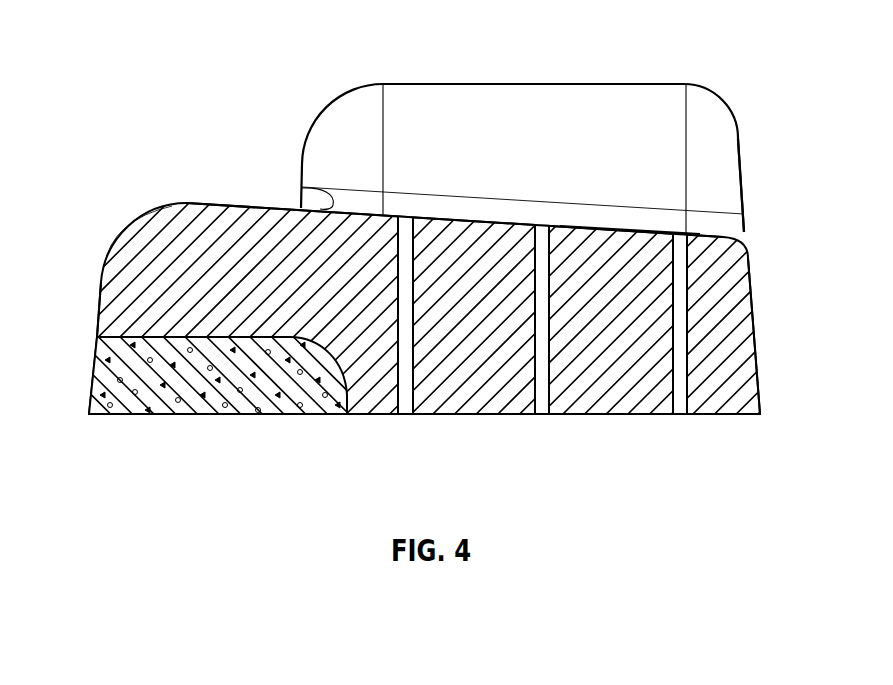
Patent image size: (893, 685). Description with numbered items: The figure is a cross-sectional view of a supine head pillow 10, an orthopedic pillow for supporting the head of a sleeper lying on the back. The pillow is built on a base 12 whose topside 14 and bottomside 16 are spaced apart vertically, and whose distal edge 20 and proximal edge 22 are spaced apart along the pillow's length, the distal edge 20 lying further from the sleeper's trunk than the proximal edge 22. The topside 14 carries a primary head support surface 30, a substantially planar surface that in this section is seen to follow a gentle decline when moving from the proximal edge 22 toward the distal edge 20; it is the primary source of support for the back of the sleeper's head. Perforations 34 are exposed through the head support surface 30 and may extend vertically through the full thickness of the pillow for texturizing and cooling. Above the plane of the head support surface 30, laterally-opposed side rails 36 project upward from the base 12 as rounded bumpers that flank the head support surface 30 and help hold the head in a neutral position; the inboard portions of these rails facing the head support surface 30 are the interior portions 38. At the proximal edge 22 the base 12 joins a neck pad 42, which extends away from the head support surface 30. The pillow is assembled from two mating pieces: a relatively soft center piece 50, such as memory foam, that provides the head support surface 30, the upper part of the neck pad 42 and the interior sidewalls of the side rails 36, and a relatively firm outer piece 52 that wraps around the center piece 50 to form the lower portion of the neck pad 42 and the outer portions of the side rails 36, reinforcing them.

The supine head pillow 10 is at (223, 70).
The base 12 is at (601, 405).
The topside 14 is at (627, 232).
The bottomside 16 is at (480, 416).
The distal edge 20 is at (738, 233).
The proximal edge 22 is at (300, 209).
The primary head support surface 30 is at (486, 222).
The perforations 34 is at (405, 286).
The laterally-opposed side rails 36 is at (735, 127).
The interior portions of side rails 38 is at (561, 188).
The neck pad 42 is at (97, 305).
The relatively soft center piece 50 is at (727, 410).
The relatively firm outer piece 52 is at (135, 416).